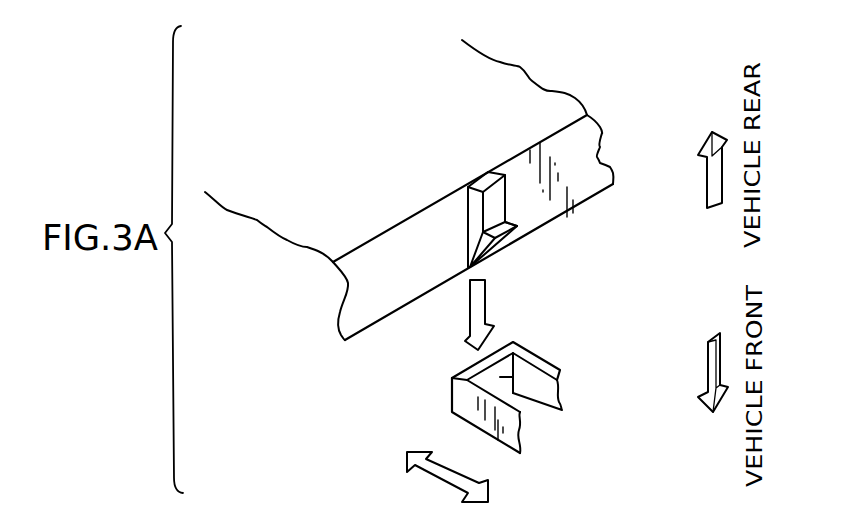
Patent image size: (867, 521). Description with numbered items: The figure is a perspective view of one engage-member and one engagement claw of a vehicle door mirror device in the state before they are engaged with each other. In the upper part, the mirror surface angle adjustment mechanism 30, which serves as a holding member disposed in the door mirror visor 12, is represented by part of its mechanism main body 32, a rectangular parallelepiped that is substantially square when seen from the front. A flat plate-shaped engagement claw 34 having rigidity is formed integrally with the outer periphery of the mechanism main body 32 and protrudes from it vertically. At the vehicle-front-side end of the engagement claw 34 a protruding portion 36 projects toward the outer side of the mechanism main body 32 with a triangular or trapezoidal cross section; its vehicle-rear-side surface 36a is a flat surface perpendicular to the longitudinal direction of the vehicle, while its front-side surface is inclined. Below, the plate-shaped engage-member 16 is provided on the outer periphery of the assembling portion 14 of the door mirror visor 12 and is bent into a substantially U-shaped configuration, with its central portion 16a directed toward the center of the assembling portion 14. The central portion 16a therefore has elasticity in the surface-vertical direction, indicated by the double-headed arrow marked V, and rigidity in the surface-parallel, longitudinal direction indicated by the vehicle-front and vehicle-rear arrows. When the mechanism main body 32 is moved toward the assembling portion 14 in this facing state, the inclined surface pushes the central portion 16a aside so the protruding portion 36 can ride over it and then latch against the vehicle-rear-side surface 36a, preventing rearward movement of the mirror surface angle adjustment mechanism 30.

The mirror surface angle adjustment mechanism 30 is at (436, 173).
The mechanism main body 32 is at (510, 90).
The engagement claw 34 is at (467, 203).
The protruding portion 36 is at (505, 243).
The vehicle-rear-side surface 36a is at (499, 222).
The assembling portion 14 is at (416, 382).
The door mirror visor 12 is at (545, 382).
The engage-member 16 is at (533, 350).
The central portion 16a is at (500, 377).